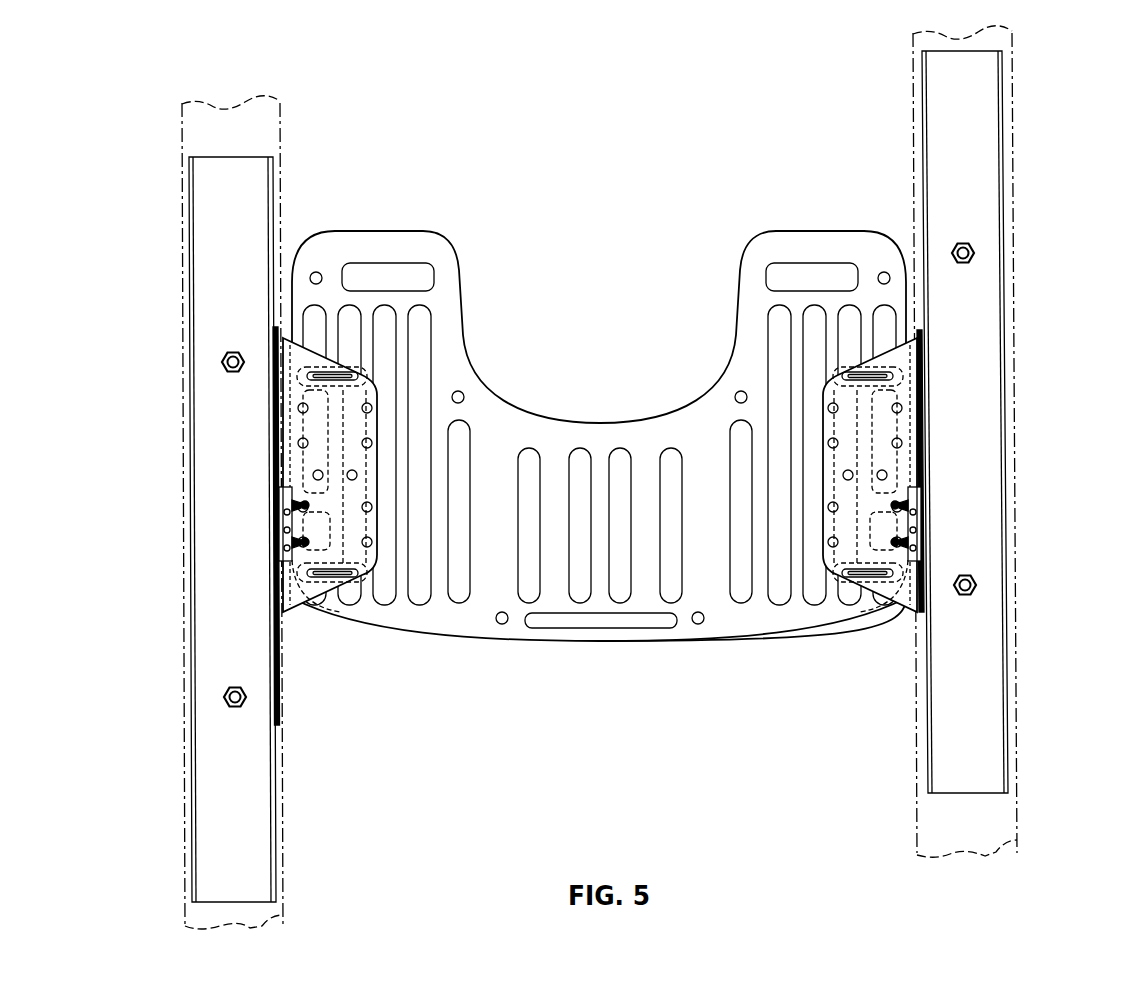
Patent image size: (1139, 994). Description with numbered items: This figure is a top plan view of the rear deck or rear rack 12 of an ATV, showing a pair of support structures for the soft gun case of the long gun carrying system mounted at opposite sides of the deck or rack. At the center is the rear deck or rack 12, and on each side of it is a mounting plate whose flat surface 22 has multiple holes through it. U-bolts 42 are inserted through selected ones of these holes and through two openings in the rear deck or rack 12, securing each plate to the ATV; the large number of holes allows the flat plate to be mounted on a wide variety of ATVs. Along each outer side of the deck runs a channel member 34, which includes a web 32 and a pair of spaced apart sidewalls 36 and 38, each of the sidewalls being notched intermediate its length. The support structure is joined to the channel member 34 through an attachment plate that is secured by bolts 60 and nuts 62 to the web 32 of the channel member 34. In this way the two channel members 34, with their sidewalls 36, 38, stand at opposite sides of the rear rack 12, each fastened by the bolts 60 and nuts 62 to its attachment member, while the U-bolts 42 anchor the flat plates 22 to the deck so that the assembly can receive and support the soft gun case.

The rear deck or rear rack 12 is at (563, 300).
The flat surface 22 is at (353, 428).
The web 32 is at (985, 425).
The channel member 34 is at (322, 165).
The sidewall 36 is at (205, 752).
The sidewall 38 is at (275, 790).
The U-bolt 42 is at (336, 578).
The bolt 60 is at (222, 368).
The nut 62 is at (222, 354).